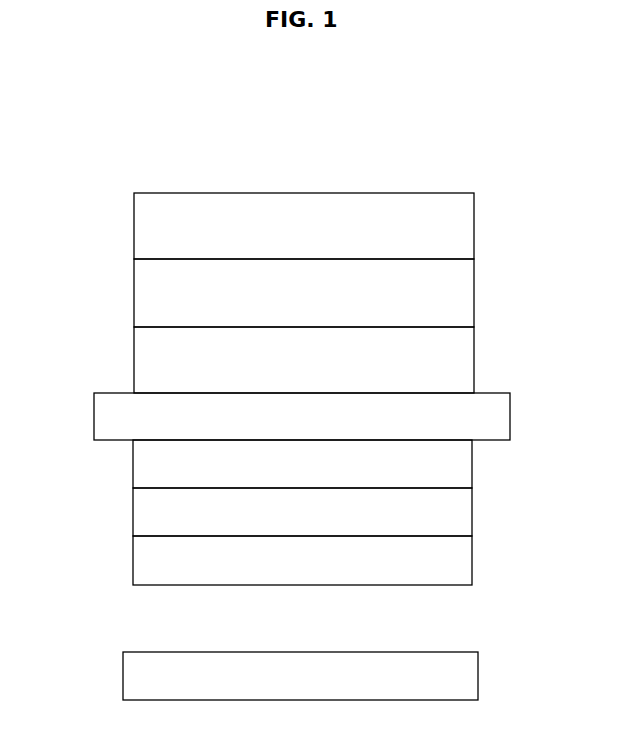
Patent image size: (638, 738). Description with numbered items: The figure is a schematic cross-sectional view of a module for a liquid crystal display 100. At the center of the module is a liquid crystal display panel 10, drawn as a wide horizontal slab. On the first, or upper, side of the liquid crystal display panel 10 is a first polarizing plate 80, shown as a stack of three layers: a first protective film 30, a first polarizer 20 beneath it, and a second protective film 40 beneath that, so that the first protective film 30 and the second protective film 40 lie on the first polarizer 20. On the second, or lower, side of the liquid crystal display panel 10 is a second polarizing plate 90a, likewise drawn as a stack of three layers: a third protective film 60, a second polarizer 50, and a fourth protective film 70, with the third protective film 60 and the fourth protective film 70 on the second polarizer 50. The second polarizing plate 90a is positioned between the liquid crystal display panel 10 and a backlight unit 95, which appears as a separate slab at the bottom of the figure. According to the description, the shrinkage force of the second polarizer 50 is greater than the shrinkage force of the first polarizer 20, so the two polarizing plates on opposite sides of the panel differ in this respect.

The module for a liquid crystal display 100 is at (457, 159).
The liquid crystal display panel 10 is at (108, 414).
The first polarizer 20 is at (147, 297).
The first protective film 30 is at (147, 227).
The second protective film 40 is at (147, 365).
The second polarizer 50 is at (146, 509).
The third protective film 60 is at (146, 461).
The fourth protective film 70 is at (146, 557).
The first polarizing plate 80 is at (479, 194).
The second polarizing plate 90a is at (477, 442).
The backlight unit 95 is at (138, 673).